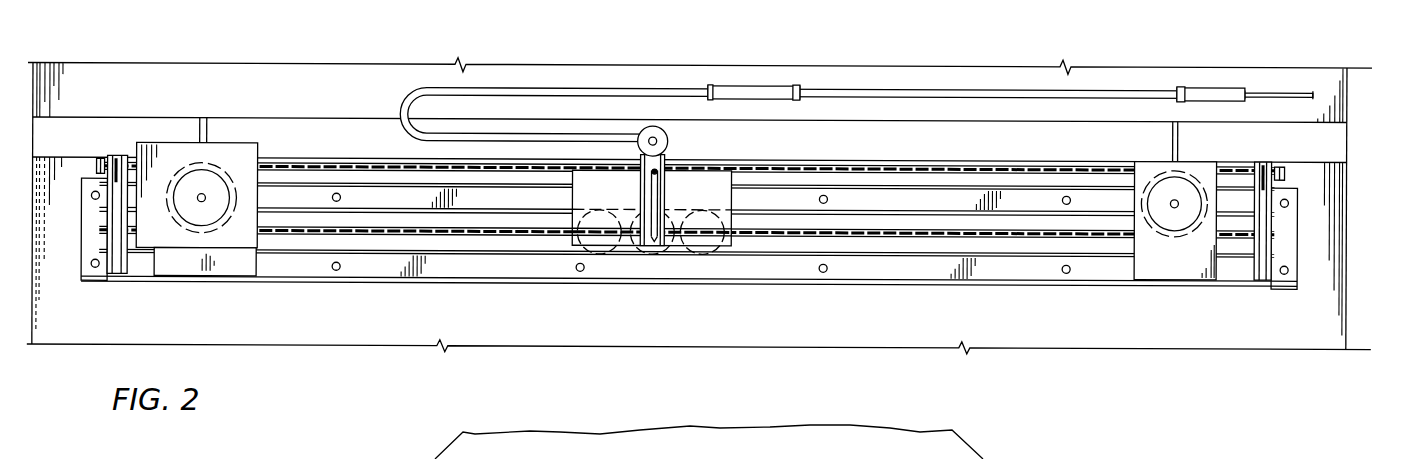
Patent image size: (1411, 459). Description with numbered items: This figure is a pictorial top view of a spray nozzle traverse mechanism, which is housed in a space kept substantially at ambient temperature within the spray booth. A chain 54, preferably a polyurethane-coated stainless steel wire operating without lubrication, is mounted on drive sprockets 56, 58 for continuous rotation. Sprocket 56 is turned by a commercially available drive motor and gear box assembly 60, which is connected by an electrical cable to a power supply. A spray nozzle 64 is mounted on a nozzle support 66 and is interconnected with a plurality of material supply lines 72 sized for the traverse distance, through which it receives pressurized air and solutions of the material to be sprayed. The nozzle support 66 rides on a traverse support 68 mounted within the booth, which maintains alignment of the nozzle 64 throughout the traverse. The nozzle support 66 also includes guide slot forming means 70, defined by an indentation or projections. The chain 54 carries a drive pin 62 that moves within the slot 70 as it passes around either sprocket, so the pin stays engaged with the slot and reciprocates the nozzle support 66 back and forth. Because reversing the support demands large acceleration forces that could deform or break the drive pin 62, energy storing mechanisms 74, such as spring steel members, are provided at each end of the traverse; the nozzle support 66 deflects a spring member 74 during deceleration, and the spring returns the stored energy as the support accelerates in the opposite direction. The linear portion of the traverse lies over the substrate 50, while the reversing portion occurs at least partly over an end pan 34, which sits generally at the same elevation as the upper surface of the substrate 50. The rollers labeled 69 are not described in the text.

The end pan 34 is at (60, 133).
The substrate 50 is at (1017, 148).
The chain 54 is at (1090, 164).
The drive sprocket 56 is at (193, 178).
The drive sprocket 58 is at (1185, 182).
The drive motor and gear box assembly 60 is at (243, 155).
The drive pin 62 is at (663, 176).
The spray nozzle 64 is at (667, 131).
The nozzle support 66 is at (718, 194).
The traverse support 68 is at (897, 193).
The rollers 69 is at (700, 249).
The guide slot forming means 70 is at (646, 185).
The material supply lines 72 is at (427, 87).
The energy storing mechanism 74 is at (110, 153).